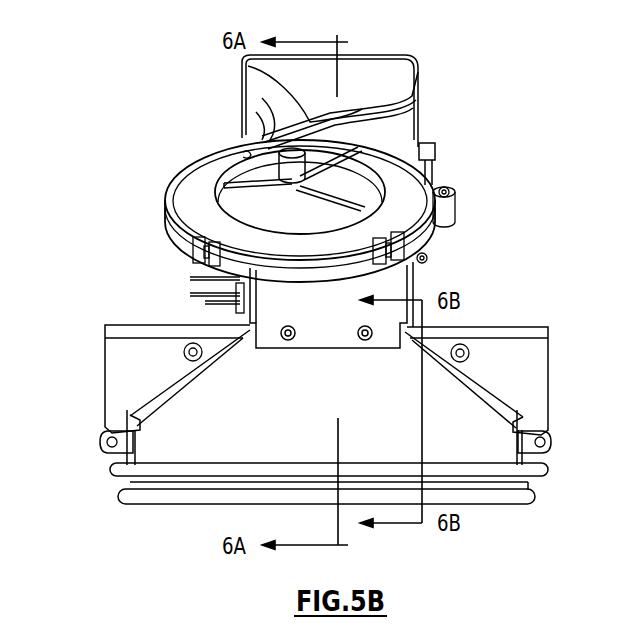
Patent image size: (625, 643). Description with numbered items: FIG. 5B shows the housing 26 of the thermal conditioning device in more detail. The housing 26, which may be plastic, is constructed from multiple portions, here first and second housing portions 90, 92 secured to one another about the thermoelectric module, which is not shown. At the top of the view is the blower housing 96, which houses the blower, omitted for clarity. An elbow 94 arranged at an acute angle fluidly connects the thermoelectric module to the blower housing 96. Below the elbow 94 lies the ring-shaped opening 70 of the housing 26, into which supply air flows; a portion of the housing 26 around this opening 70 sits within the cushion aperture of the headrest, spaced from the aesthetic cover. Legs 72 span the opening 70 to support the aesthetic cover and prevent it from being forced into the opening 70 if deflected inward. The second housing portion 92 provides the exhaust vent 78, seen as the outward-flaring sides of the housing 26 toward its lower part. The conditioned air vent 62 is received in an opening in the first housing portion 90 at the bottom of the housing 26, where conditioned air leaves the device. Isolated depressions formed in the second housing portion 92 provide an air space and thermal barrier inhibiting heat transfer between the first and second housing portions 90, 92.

The housing 26 is at (498, 277).
The conditioned air vent 62 is at (485, 485).
The opening 70 is at (247, 152).
The legs 72 is at (225, 186).
The exhaust vent 78 is at (105, 358).
The first housing portion 90 is at (497, 413).
The second housing portion 92 is at (524, 338).
The elbow 94 is at (410, 83).
The blower housing 96 is at (442, 190).